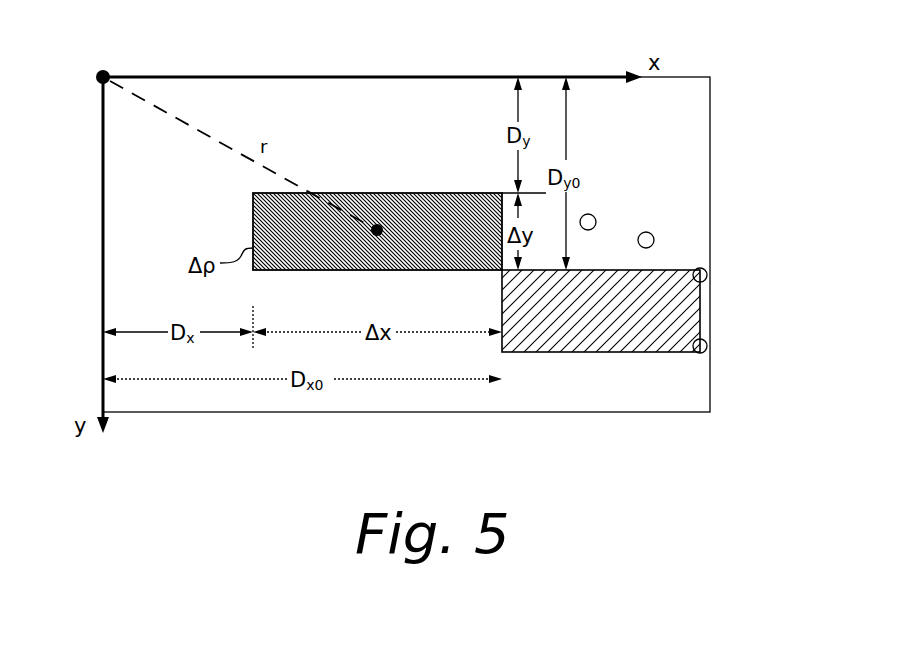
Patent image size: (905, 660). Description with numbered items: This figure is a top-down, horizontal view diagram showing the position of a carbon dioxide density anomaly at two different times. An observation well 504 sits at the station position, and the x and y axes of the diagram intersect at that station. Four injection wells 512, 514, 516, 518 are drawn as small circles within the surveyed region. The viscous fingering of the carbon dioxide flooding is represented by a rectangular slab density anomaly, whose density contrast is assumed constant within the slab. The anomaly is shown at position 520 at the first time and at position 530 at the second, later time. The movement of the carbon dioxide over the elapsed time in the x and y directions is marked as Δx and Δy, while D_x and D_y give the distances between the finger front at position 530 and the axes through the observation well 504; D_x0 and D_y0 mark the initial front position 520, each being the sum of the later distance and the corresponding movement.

The observation well 504 is at (100, 84).
The injection well 512 is at (594, 216).
The injection well 514 is at (654, 238).
The injection well 516 is at (708, 277).
The injection well 518 is at (708, 346).
The anomaly position at time T1 520 is at (642, 353).
The anomaly position at time T2 530 is at (253, 218).